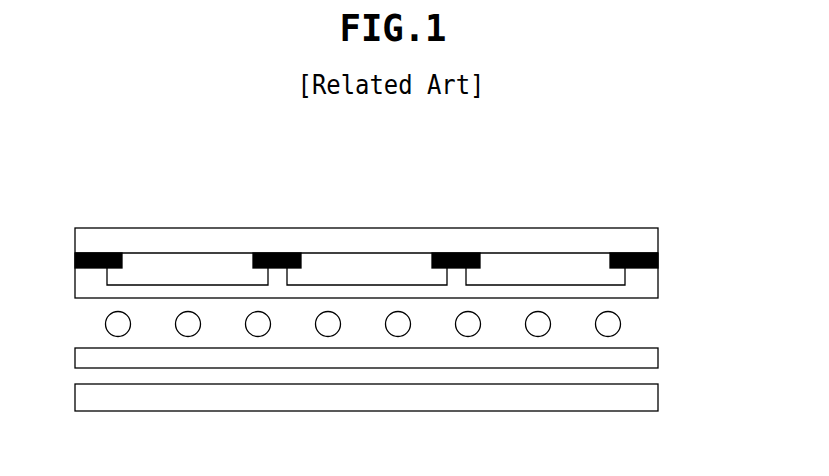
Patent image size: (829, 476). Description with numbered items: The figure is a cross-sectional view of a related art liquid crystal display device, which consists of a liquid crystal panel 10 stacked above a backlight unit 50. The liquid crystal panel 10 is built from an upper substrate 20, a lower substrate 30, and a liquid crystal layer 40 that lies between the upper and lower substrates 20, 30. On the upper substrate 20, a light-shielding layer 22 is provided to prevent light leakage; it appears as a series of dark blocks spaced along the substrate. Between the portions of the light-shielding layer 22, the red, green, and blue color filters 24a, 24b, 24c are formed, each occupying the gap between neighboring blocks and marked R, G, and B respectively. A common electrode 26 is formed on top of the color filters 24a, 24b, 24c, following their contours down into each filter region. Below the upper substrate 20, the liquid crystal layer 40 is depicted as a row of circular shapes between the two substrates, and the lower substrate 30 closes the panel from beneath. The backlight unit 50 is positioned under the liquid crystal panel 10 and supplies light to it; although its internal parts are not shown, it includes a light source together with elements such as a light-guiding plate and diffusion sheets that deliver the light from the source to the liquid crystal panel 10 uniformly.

The liquid crystal panel 10 is at (728, 239).
The upper substrate 20 is at (658, 242).
The light-shielding layer 22 is at (658, 259).
The red color filter 24a is at (156, 263).
The green color filter 24b is at (334, 263).
The blue color filter 24c is at (512, 263).
The common electrode 26 is at (658, 281).
The lower substrate 30 is at (658, 356).
The liquid crystal layer 40 is at (648, 323).
The backlight unit 50 is at (658, 396).